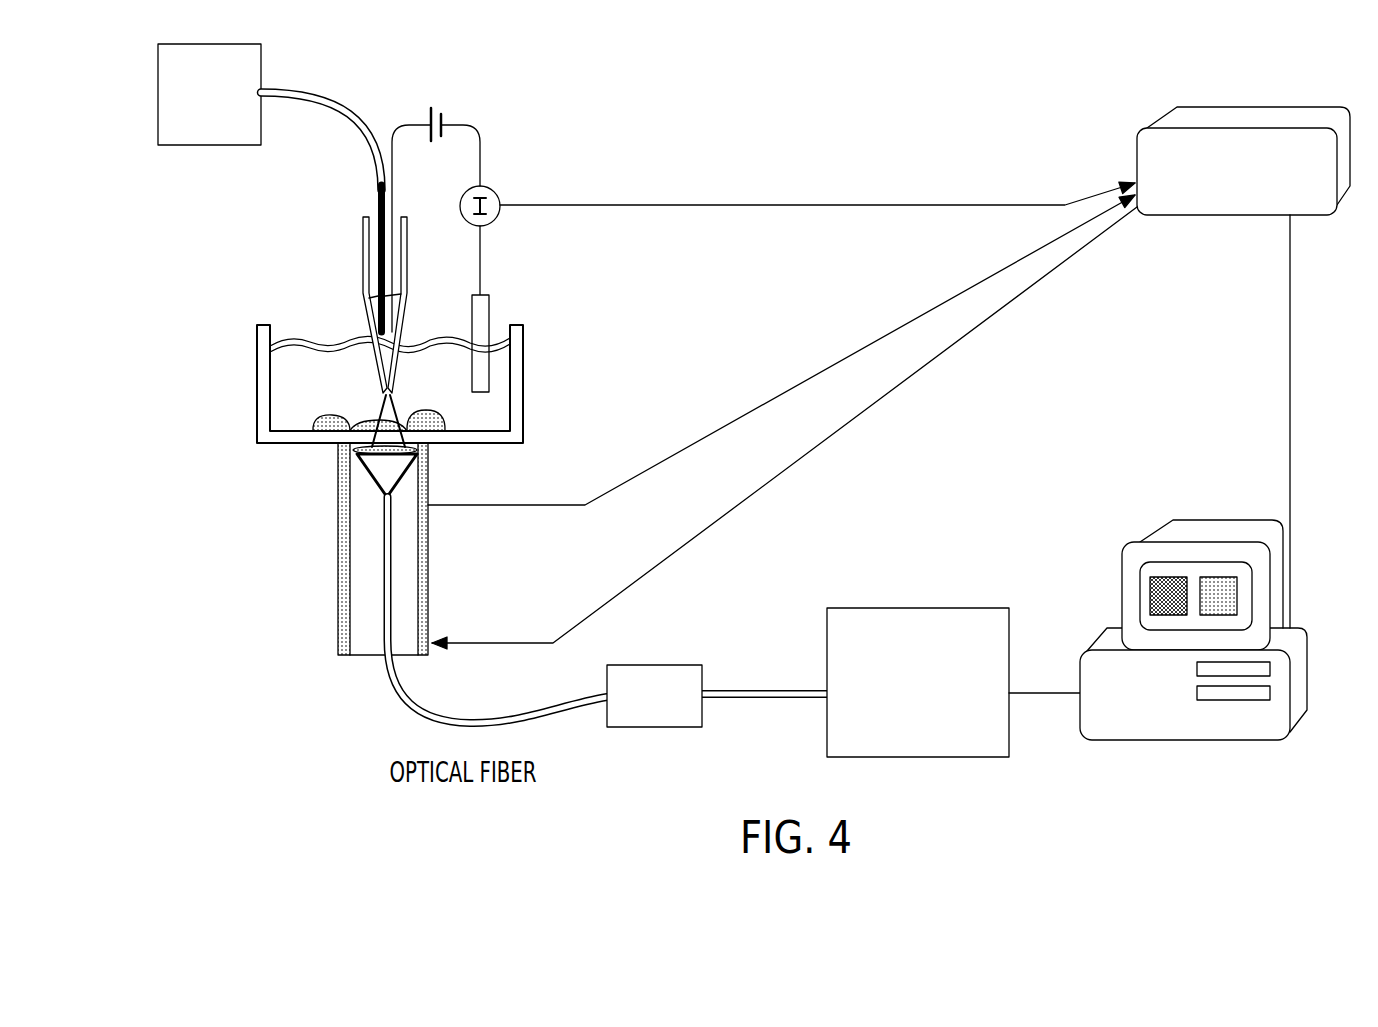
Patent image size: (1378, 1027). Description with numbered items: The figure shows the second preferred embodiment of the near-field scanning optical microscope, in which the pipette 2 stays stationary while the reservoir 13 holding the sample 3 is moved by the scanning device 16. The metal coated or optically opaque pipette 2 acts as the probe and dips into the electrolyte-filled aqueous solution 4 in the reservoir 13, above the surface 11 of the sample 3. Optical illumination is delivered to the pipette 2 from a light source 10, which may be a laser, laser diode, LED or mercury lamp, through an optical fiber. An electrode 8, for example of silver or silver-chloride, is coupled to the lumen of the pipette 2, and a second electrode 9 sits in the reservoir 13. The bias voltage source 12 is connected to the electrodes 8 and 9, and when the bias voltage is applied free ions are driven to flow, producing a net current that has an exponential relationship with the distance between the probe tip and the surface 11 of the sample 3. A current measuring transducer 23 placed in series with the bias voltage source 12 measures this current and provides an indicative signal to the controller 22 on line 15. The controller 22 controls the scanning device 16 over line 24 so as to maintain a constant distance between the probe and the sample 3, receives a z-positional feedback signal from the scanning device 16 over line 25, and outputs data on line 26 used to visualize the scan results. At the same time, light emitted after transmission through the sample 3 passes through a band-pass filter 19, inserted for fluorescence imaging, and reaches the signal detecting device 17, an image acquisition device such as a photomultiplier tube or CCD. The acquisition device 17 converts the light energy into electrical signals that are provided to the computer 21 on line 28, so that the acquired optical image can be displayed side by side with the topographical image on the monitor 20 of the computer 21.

The pipette 2 is at (363, 268).
The sample 3 is at (327, 410).
The aqueous solution 4 is at (444, 383).
The electrode 8 is at (400, 281).
The second electrode 9 is at (490, 312).
The light source 10 is at (197, 146).
The surface 11 is at (357, 418).
The bias voltage source 12 is at (446, 122).
The reservoir 13 is at (257, 375).
The line 15 is at (800, 205).
The scanning device 16 is at (338, 563).
The signal detecting device 17 is at (936, 758).
The filter 19 is at (660, 728).
The monitor 20 is at (1118, 575).
The computer 21 is at (1179, 668).
The controller 22 is at (1260, 107).
The current measuring transducer 23 is at (491, 193).
The line 24 is at (905, 378).
The line 25 is at (777, 396).
The line 26 is at (1292, 388).
The line 28 is at (1050, 705).